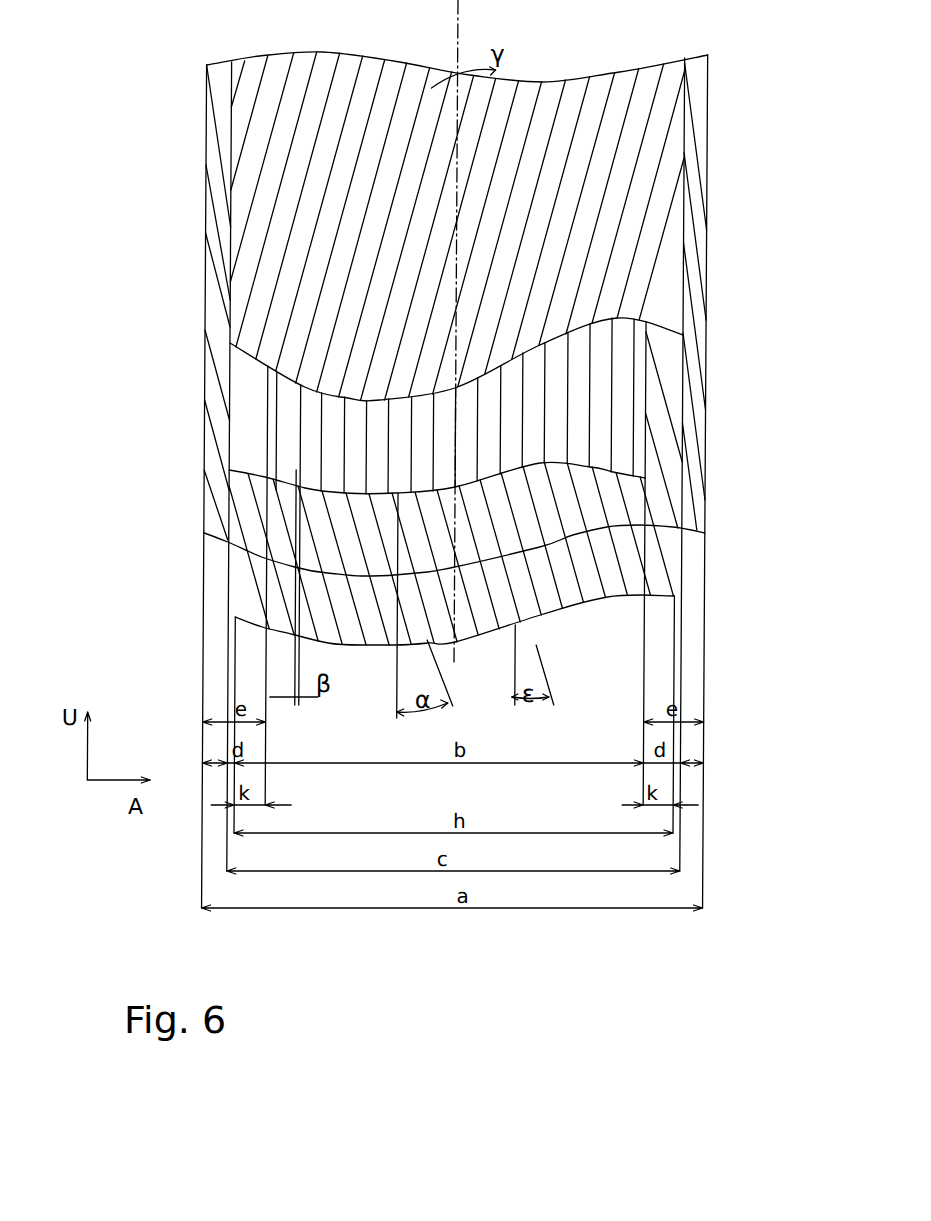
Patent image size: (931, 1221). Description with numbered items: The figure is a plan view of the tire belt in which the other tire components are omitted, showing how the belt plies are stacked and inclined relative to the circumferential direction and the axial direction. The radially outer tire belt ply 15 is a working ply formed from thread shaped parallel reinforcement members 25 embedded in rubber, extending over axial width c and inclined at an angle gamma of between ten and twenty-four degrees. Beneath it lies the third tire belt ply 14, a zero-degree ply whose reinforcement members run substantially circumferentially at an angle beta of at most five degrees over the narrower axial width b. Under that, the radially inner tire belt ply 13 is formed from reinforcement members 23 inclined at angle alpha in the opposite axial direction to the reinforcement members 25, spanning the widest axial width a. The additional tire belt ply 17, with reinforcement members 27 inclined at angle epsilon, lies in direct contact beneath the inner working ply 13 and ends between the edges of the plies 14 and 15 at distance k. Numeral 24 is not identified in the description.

The radially inner tire belt ply 13 is at (692, 247).
The third tire belt ply 14 is at (622, 433).
The radially outer tire belt ply 15 is at (656, 216).
The tire belt ply 17 is at (595, 586).
The reinforcement members 23 is at (234, 473).
The left edge lines 24 is at (325, 442).
The reinforcement members 25 is at (246, 215).
The reinforcement members 27 is at (341, 613).